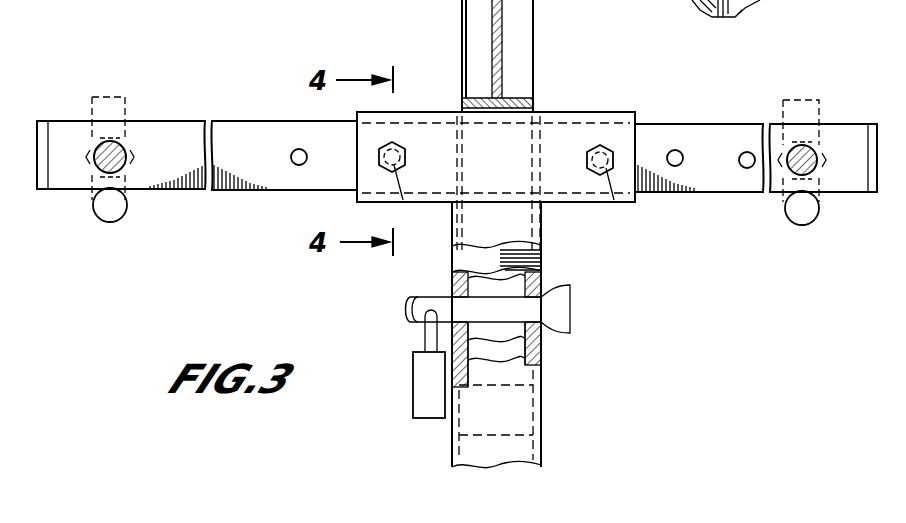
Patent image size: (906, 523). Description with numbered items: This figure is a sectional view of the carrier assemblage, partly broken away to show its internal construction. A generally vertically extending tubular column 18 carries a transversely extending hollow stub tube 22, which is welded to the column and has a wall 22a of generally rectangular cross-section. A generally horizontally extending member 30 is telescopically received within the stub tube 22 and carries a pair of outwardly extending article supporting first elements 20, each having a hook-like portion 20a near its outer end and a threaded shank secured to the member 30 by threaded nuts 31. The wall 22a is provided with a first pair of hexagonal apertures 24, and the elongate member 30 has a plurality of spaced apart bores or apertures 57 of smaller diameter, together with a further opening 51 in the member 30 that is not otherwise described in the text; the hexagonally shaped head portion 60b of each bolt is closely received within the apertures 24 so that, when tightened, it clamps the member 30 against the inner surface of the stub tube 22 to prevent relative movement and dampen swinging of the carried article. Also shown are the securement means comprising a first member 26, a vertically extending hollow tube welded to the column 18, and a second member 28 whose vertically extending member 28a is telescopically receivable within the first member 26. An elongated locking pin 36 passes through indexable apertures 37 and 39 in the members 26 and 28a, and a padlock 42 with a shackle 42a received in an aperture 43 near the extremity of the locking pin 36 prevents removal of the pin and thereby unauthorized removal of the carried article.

The tubular column 18 is at (541, 422).
The article supporting first elements 20 is at (100, 147).
The hook-like portion 20a is at (100, 222).
The hollow stub tube 22 is at (556, 112).
The wall 22a is at (404, 112).
The first pair of apertures 24 is at (403, 200).
The first member 26 is at (543, 357).
The second member 28 is at (533, 43).
The vertically extending member 28a is at (537, 283).
The horizontally extending member 30 is at (164, 120).
The threaded nuts 31 is at (130, 157).
The locking pin 36 is at (575, 327).
The indexable apertures 37 is at (447, 297).
The indexable apertures 39 is at (524, 320).
The padlock 42 is at (413, 412).
The shackle 42a is at (428, 337).
The aperture 43 is at (408, 309).
The hole 51 is at (290, 156).
The spaced apart bores or apertures 57 is at (743, 153).
The hexagonally shaped head portion 60b is at (378, 162).